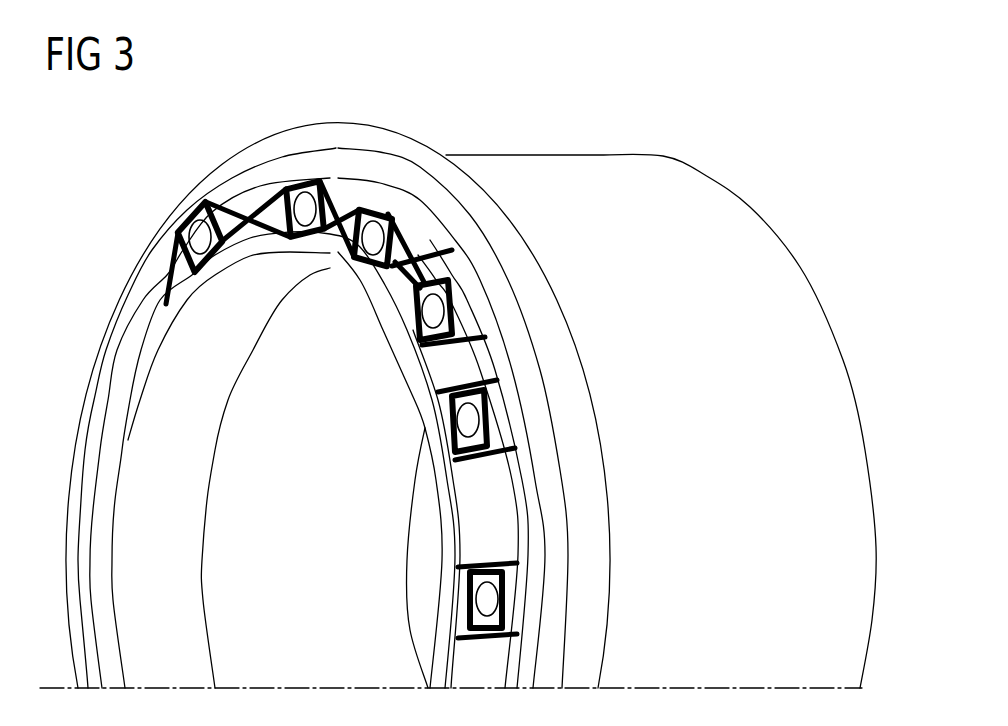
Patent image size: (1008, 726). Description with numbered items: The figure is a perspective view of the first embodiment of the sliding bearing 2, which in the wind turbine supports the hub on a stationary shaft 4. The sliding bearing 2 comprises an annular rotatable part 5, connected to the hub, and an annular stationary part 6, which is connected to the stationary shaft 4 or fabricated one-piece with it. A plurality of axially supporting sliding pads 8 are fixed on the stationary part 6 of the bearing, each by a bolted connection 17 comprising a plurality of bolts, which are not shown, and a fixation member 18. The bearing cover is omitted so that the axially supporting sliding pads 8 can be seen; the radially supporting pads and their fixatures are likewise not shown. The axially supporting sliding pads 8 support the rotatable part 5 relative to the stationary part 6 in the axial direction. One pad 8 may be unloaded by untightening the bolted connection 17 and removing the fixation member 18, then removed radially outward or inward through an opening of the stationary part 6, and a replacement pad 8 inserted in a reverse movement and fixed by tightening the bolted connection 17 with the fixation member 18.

The sliding bearing 2 is at (425, 152).
The stationary shaft 4 is at (750, 228).
The rotatable part 5 is at (590, 515).
The stationary part 6 is at (467, 510).
The axially supporting sliding pad 8 is at (200, 230).
The bolted connection 17 is at (458, 272).
The fixation member 18 is at (455, 302).